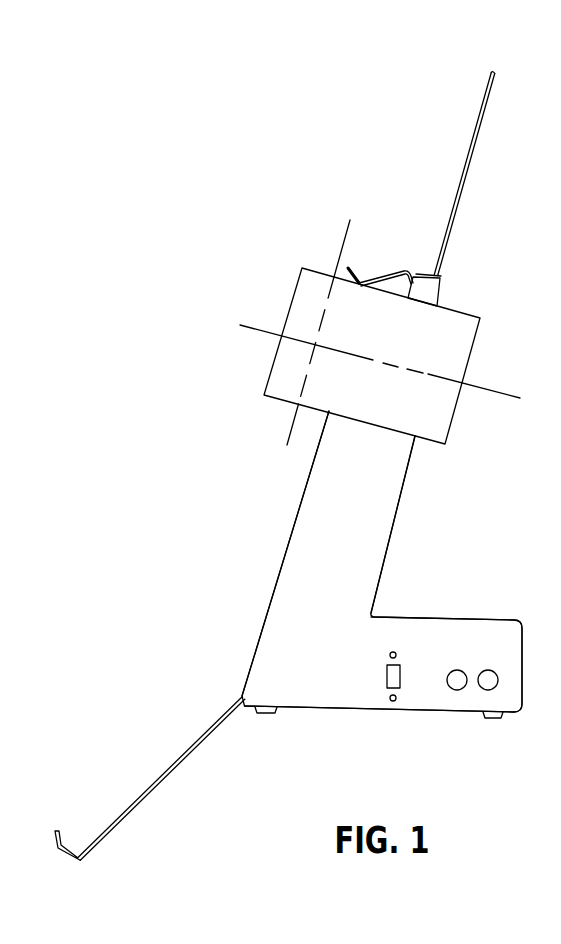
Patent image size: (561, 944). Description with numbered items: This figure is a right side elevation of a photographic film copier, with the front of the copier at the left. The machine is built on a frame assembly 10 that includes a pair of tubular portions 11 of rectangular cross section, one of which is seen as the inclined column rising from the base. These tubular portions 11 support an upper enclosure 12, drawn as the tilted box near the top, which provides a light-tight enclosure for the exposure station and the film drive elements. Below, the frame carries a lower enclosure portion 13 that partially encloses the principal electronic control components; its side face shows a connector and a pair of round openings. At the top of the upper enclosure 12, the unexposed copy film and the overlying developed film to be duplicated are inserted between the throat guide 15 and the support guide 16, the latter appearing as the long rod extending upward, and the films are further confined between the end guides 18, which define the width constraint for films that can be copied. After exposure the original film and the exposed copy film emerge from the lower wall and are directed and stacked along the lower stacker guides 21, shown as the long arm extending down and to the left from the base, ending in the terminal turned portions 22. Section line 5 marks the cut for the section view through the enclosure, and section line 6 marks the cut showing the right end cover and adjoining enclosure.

The section line 5— 5 is at (338, 224).
The section line 6— 6 is at (256, 312).
The frame assembly 10 is at (264, 587).
The tubular portions 11 is at (398, 505).
The upper enclosure 12 is at (463, 308).
The lower enclosure portion 13 is at (477, 617).
The throat guide 15 is at (383, 272).
The support guide 16 is at (460, 212).
The end guides 18 is at (443, 290).
The lower stacker guides 21 is at (183, 758).
The terminal turned portions 22 is at (60, 837).